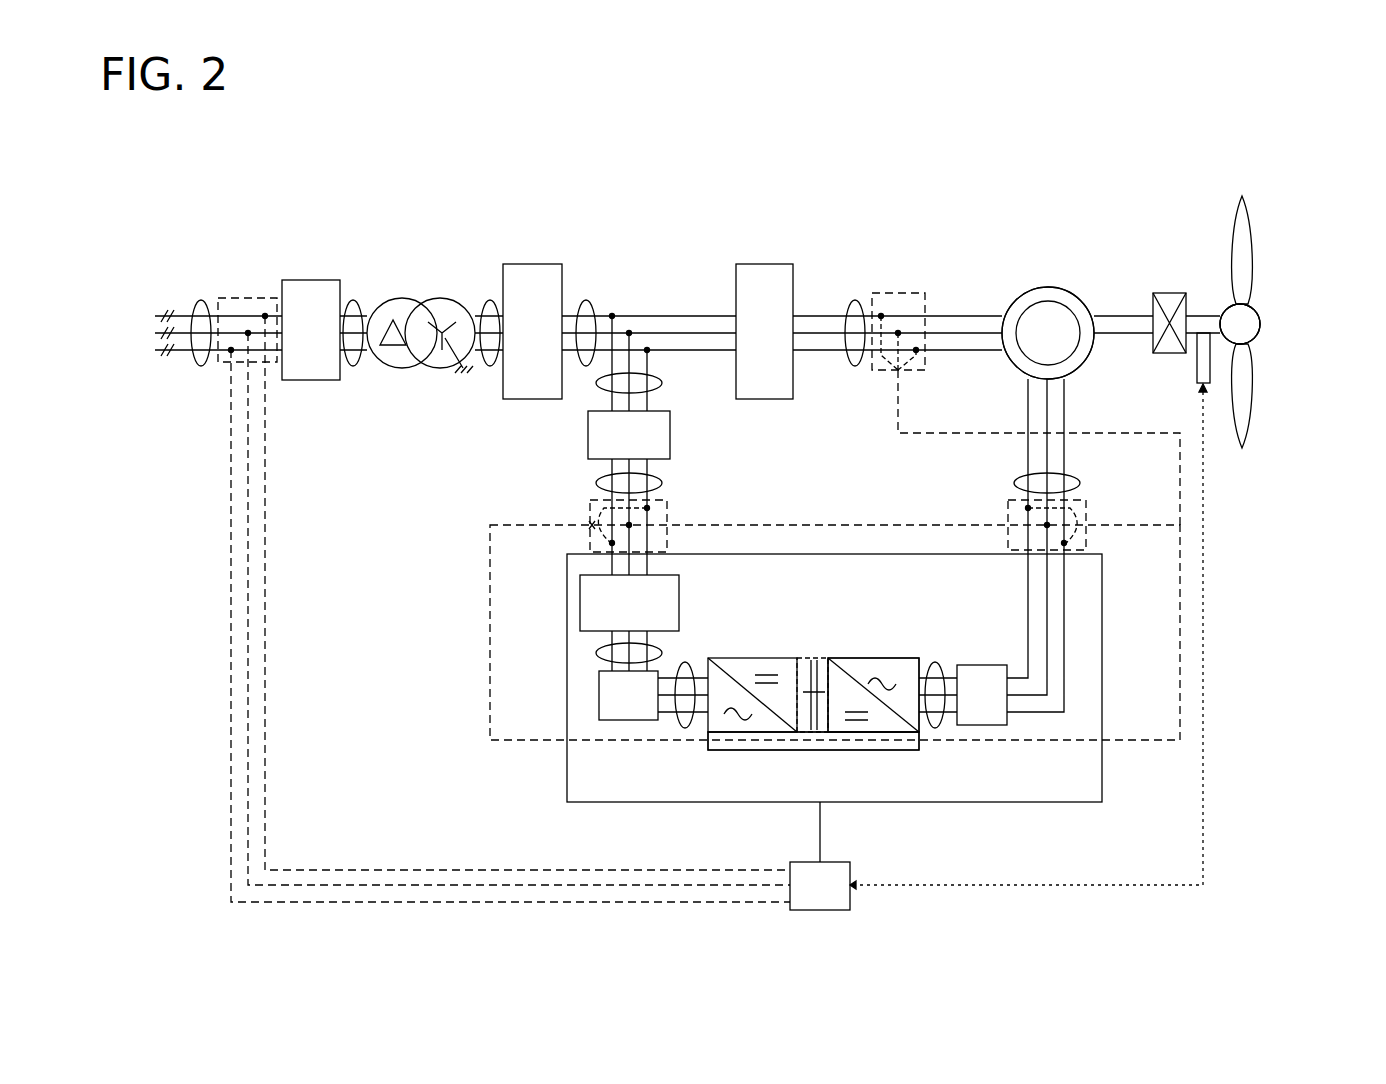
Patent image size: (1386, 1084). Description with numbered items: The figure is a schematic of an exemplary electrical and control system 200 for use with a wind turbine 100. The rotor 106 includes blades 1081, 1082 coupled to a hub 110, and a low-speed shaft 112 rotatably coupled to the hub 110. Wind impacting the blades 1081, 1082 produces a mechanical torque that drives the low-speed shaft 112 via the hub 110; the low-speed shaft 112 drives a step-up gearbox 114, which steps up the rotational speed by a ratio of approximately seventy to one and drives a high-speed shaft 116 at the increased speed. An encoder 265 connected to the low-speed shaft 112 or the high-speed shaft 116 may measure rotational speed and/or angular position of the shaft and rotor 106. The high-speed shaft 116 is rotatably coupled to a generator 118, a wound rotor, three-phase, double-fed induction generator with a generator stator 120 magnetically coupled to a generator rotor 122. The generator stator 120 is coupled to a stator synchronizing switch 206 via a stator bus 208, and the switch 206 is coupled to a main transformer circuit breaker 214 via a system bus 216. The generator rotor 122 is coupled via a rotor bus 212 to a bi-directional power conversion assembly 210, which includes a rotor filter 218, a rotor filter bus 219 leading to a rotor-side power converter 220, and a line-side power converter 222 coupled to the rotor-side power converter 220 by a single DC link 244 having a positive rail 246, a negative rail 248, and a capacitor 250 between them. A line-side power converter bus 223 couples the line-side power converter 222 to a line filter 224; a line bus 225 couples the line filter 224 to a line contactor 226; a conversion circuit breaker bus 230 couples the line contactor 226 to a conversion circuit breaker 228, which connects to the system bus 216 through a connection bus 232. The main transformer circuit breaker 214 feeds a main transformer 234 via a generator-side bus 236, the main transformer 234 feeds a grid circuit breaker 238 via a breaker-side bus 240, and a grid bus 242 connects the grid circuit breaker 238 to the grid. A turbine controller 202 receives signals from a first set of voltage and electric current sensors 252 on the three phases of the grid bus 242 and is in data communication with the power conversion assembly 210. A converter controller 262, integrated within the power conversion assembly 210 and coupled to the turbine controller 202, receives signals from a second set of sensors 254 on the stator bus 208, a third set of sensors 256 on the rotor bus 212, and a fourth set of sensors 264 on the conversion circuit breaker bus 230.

The wind turbine 100 is at (1226, 180).
The rotor 106 is at (1267, 300).
The hub 110 is at (1262, 323).
The blade 1081 is at (1253, 255).
The blade 1082 is at (1253, 400).
The low-speed shaft 112 is at (1203, 314).
The step-up gearbox 114 is at (1166, 292).
The high-speed shaft 116 is at (1123, 315).
The generator 118 is at (1049, 245).
The generator stator 120 is at (1048, 287).
The generator rotor 122 is at (1040, 310).
The electrical and control system 200 is at (256, 163).
The turbine controller 202 is at (820, 856).
The stator synchronizing switch 206 is at (768, 264).
The stator bus 208 is at (853, 298).
The power conversion assembly 210 is at (1102, 671).
The rotor bus 212 is at (1080, 485).
The main transformer circuit breaker 214 is at (535, 264).
The system bus 216 is at (588, 298).
The rotor filter 218 is at (977, 675).
The rotor filter bus 219 is at (937, 664).
The rotor-side power converter 220 is at (922, 728).
The line-side power converter 222 is at (708, 722).
The line-side power converter bus 223 is at (690, 665).
The line filter 224 is at (599, 698).
The line bus 225 is at (596, 652).
The line contactor 226 is at (580, 605).
The conversion circuit breaker 228 is at (671, 435).
The conversion circuit breaker bus 230 is at (655, 485).
The connection bus 232 is at (661, 383).
The main transformer 234 is at (440, 298).
The generator-side bus 236 is at (490, 296).
The grid circuit breaker 238 is at (303, 280).
The breaker-side bus 240 is at (353, 300).
The grid bus 242 is at (201, 300).
The DC link 244 is at (795, 616).
The positive rail 246 is at (820, 658).
The negative rail 248 is at (826, 735).
The capacitor 250 is at (806, 680).
The first set of voltage and electric current sensors 252 is at (222, 372).
The second set of voltage and electric current sensors 254 is at (910, 290).
The third set of voltage and electric current sensors 256 is at (1000, 520).
The converter controller 262 is at (875, 740).
The fourth set of voltage and electric current sensors 264 is at (668, 525).
The encoder 265 is at (1192, 367).